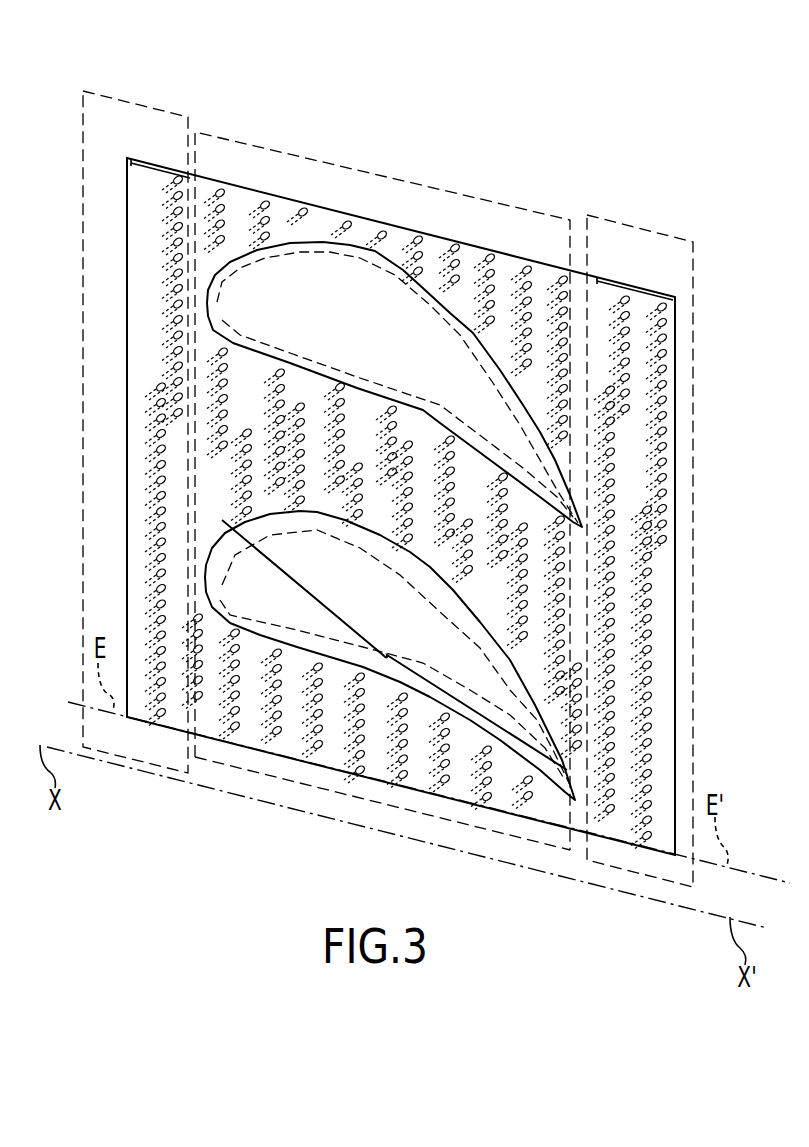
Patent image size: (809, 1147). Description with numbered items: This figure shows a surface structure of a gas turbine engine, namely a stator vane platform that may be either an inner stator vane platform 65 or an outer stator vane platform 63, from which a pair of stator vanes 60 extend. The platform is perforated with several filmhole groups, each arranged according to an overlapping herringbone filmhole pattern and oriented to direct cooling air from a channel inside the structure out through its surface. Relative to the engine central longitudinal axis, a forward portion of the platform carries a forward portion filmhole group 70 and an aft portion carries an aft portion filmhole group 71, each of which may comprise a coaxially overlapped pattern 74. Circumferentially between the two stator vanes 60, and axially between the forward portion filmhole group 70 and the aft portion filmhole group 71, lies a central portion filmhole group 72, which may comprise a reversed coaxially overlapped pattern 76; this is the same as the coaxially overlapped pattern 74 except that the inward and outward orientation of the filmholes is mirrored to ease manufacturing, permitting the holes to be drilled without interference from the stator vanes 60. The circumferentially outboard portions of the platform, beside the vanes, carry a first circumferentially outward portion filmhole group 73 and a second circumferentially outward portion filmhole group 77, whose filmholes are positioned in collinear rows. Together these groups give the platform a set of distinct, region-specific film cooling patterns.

The stator vane 60 is at (305, 468).
The outer stator vane platform 63 is at (401, 450).
The inner stator vane platform 65 is at (540, 114).
The forward portion filmhole group 70 is at (100, 92).
The aft portion filmhole group 71 is at (668, 233).
The central portion filmhole group 72 is at (283, 350).
The first circumferentially outward portion filmhole group 73 is at (266, 150).
The coaxially overlapped pattern 74 is at (160, 162).
The reversed coaxially overlapped pattern 76 is at (394, 645).
The second circumferentially outward portion filmhole group 77 is at (507, 838).